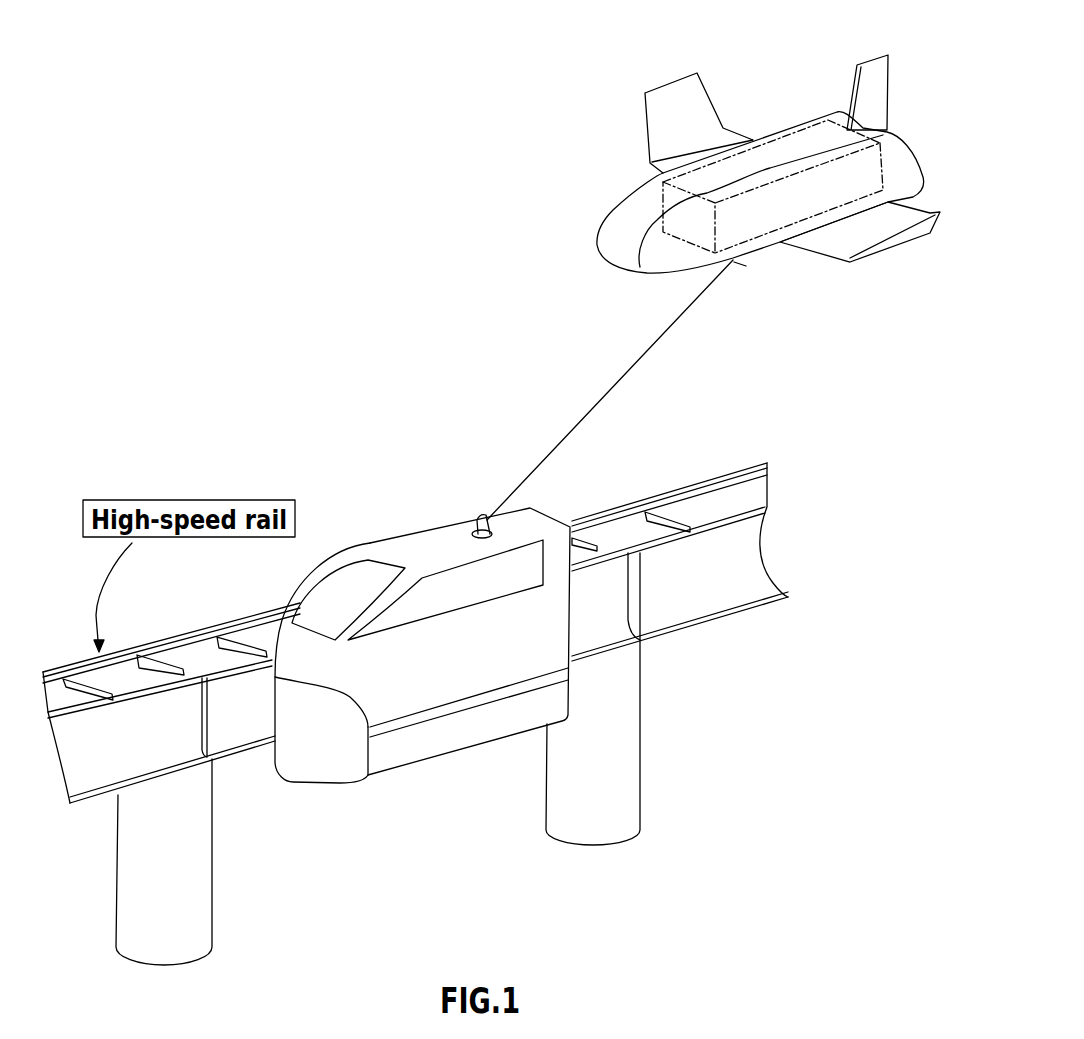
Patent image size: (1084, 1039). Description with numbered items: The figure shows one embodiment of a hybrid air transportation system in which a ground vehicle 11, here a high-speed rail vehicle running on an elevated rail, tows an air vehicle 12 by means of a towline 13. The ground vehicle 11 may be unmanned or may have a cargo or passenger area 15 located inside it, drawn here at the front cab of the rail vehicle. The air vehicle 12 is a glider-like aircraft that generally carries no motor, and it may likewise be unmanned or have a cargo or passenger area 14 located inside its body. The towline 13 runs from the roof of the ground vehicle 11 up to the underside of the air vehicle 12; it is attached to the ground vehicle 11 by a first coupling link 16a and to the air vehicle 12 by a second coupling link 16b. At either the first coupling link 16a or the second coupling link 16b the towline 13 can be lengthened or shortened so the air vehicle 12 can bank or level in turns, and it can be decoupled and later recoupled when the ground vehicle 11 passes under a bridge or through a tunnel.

The ground vehicle 11 is at (400, 528).
The air vehicle 12 is at (590, 215).
The towline 13 is at (647, 350).
The cargo or passenger area 14 is at (780, 157).
The cargo or passenger area 15 is at (360, 585).
The first coupling link 16a is at (476, 512).
The second coupling link 16b is at (742, 268).